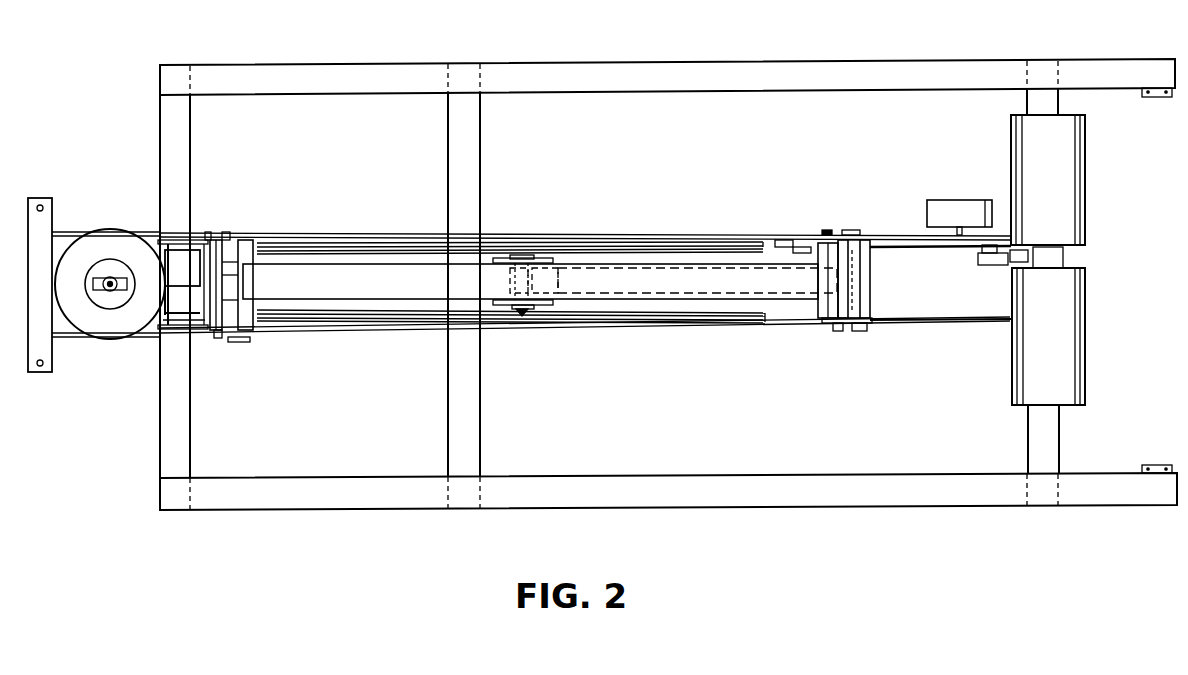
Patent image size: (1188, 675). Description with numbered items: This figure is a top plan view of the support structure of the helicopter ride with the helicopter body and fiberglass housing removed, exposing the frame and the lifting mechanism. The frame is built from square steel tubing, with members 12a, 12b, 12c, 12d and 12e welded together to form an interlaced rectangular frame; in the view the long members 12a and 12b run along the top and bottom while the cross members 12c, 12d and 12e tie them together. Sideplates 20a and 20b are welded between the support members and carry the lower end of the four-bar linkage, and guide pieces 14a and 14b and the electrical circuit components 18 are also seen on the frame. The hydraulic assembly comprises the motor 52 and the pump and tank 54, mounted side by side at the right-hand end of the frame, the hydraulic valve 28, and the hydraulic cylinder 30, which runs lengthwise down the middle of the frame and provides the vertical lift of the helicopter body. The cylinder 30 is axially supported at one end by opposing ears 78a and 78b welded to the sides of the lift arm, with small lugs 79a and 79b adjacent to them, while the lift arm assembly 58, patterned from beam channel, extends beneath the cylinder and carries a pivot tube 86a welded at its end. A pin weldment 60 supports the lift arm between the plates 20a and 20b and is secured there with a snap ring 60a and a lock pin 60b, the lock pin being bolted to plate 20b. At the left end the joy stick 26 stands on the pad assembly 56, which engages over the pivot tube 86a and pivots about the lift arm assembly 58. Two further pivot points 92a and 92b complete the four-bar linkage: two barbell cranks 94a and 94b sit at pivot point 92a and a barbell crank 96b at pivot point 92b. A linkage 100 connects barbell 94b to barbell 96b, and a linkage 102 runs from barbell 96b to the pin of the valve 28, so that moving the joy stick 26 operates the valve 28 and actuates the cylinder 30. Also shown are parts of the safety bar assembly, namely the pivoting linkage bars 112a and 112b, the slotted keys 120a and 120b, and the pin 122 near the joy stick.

The frame member 12a is at (355, 511).
The frame member 12b is at (318, 64).
The frame member 12c is at (190, 140).
The frame member 12d is at (482, 140).
The frame member 12e is at (1062, 445).
The upper guide rail 14a is at (760, 240).
The lower guide rail 14b is at (760, 324).
The electrical circuit components 18 is at (943, 200).
The sideplate 20a is at (703, 243).
The sideplate 20b is at (720, 318).
The joy stick 26 is at (110, 291).
The hydraulic valve 28 is at (990, 264).
The hydraulic cylinder 30 is at (625, 297).
The motor 52 is at (1062, 192).
The pump and tank 54 is at (1055, 365).
The pad assembly 56 is at (92, 222).
The lift arm assembly 58 is at (620, 267).
The pin weldment 60 is at (848, 230).
The snap ring 60a is at (860, 231).
The lock pin 60b is at (866, 332).
The ear 78a is at (500, 258).
The ear 78b is at (505, 305).
The upper clamp lug 79a is at (526, 255).
The lower clamp lug 79b is at (523, 312).
The pivot tube 86a is at (238, 342).
The pivot point 92a is at (214, 338).
The pivot point 92b is at (835, 332).
The barbell crank 94a is at (182, 335).
The barbell crank 94b is at (197, 237).
The barbell crank 96b is at (795, 254).
The linkage 100 is at (185, 281).
The linkage 102 is at (918, 249).
The linkage bar 112a is at (586, 250).
The linkage bar 112b is at (650, 320).
The slotted key 120a is at (162, 335).
The slotted key 120b is at (165, 238).
The pin 122 is at (165, 290).